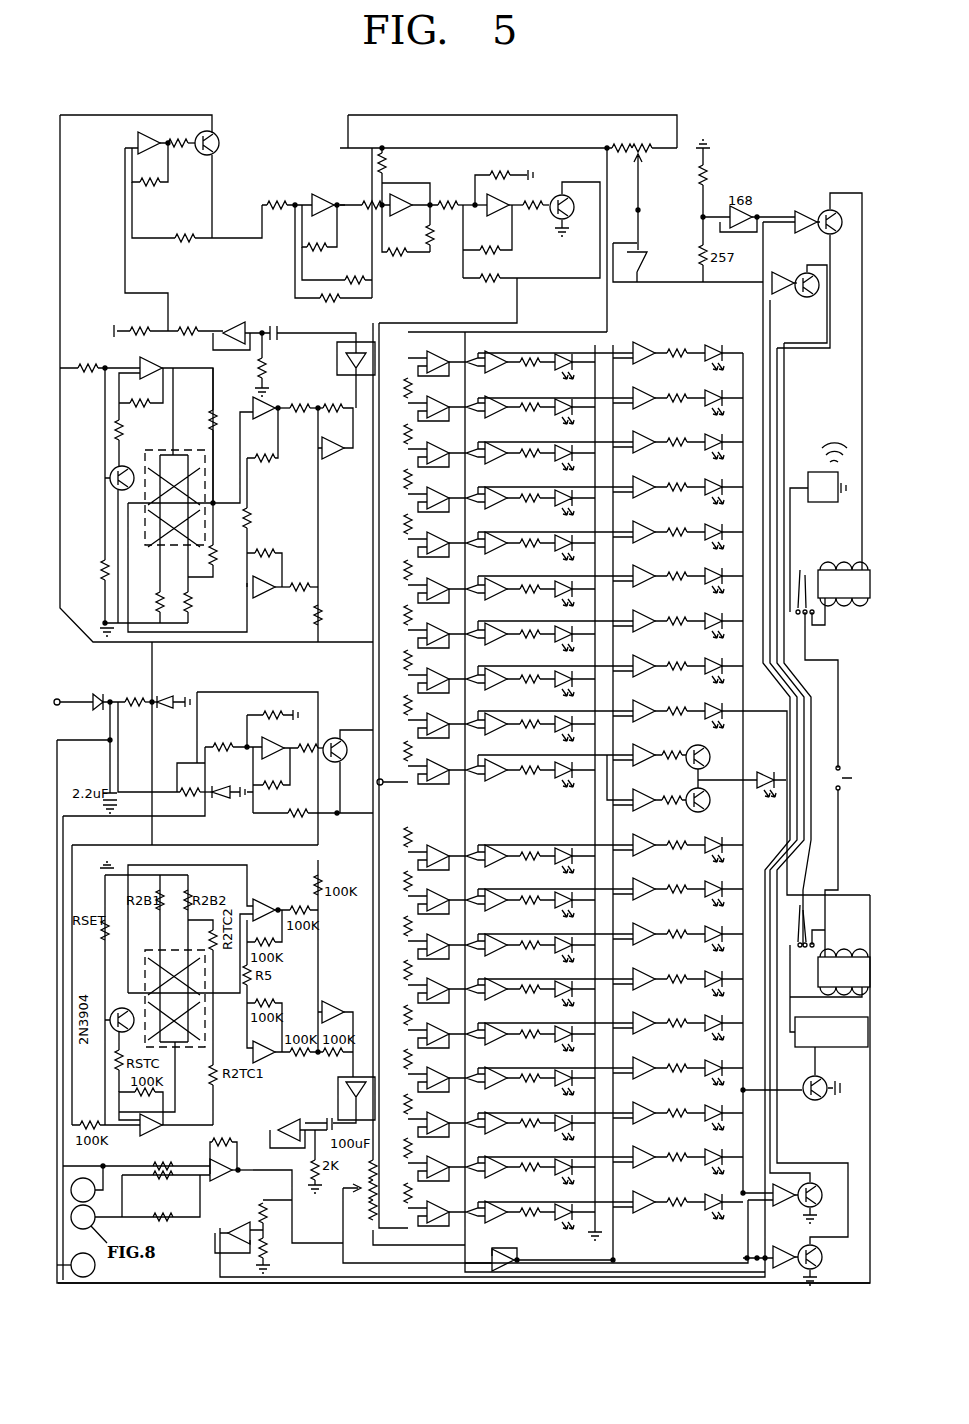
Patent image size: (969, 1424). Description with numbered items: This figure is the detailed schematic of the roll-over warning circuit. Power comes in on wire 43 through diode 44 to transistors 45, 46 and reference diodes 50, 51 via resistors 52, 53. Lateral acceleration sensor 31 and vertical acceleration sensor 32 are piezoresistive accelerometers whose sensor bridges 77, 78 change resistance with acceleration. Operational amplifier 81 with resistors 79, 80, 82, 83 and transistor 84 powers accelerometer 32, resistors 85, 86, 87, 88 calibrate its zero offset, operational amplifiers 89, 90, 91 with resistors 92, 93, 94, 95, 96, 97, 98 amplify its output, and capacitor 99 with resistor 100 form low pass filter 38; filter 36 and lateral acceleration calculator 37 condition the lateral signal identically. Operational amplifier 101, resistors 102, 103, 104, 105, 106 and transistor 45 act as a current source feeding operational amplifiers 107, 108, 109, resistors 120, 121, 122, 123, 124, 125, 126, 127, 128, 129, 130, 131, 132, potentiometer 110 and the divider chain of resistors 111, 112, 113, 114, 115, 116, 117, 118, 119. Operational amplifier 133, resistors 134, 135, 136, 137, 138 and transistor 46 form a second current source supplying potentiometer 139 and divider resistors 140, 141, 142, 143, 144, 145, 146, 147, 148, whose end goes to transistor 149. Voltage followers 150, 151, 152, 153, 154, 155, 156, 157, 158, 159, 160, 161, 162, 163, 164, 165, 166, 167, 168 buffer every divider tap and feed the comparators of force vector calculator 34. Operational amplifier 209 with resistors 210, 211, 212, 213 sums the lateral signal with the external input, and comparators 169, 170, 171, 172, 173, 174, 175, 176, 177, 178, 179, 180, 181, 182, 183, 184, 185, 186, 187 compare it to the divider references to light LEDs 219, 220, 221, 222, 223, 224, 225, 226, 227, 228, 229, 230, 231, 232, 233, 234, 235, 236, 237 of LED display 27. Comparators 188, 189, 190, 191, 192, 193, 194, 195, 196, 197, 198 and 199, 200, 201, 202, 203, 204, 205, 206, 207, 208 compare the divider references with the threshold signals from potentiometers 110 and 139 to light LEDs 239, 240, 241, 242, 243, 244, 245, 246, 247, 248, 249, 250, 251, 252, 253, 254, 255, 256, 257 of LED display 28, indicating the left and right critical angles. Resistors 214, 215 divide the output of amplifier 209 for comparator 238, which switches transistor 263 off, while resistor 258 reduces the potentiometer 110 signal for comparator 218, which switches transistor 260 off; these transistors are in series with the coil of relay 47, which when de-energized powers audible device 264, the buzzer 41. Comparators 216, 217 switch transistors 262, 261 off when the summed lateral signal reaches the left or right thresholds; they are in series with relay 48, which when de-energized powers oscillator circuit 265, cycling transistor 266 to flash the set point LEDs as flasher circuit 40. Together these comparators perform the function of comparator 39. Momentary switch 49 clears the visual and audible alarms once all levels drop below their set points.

The LED display 27 is at (585, 332).
The LED display 28 is at (712, 338).
The lateral acceleration sensor 31 is at (195, 1052).
The vertical acceleration sensor 32 is at (192, 448).
The vehicle force vector calculator 34 is at (500, 348).
The filter 36 is at (315, 1122).
The vehicle lateral acceleration calculator 37 is at (197, 1240).
The filter 38 is at (262, 330).
The comparator 39 is at (787, 200).
The flasher circuit 40 is at (650, 338).
The buzzer 41 is at (806, 492).
The wire 43 is at (73, 703).
The diode 44 is at (122, 691).
The transistor 45 is at (229, 178).
The transistor 46 is at (347, 761).
The relay 47 is at (838, 600).
The relay 48 is at (840, 970).
The momentary switch 49 is at (850, 861).
The reference diode 50 is at (173, 695).
The reference diode 51 is at (232, 797).
The resistor 52 is at (141, 704).
The resistor 53 is at (196, 791).
The thermistor bridge 77 is at (172, 450).
The thermistor bridge 78 is at (146, 943).
The resistor 79 is at (93, 502).
The resistor 80 is at (100, 368).
The operational amplifier 81 is at (176, 424).
The resistor 82 is at (141, 395).
The resistor 83 is at (115, 432).
The transistor 84 is at (105, 530).
The resistor 85 is at (145, 603).
The resistor 86 is at (205, 603).
The resistor 87 is at (212, 540).
The resistor 88 is at (222, 435).
The operational amplifier 89 is at (271, 416).
The operational amplifier 90 is at (271, 595).
The operational amplifier 91 is at (331, 525).
The resistor 92 is at (302, 587).
The resistor 93 is at (264, 560).
The resistor 94 is at (257, 540).
The resistor 95 is at (264, 458).
The resistor 96 is at (304, 407).
The resistor 97 is at (339, 416).
The resistor 98 is at (336, 612).
The capacitor 99 is at (309, 334).
The resistor 100 is at (266, 364).
The operational amplifier 101 is at (149, 223).
The resistor 102 is at (181, 142).
The resistor 103 is at (197, 212).
The resistor 104 is at (195, 331).
The resistor 105 is at (141, 331).
The resistor 106 is at (150, 173).
The operational amplifier 107 is at (328, 198).
The operational amplifier 108 is at (410, 209).
The operational amplifier 109 is at (505, 201).
The potentiometer 110 is at (642, 204).
The resistor 111 is at (397, 395).
The resistor 112 is at (397, 441).
The resistor 113 is at (397, 486).
The resistor 114 is at (397, 531).
The resistor 115 is at (397, 577).
The resistor 116 is at (397, 622).
The resistor 117 is at (397, 667).
The resistor 118 is at (397, 712).
The resistor 119 is at (397, 758).
The resistor 120 is at (287, 205).
The resistor 121 is at (319, 236).
The resistor 122 is at (337, 265).
The resistor 123 is at (333, 262).
The resistor 124 is at (365, 205).
The resistor 125 is at (387, 176).
The resistor 126 is at (406, 239).
The resistor 127 is at (442, 235).
The resistor 128 is at (461, 205).
The resistor 129 is at (504, 180).
The resistor 130 is at (487, 241).
The resistor 131 is at (534, 205).
The resistor 132 is at (531, 232).
The operational amplifier 133 is at (275, 770).
The resistor 134 is at (233, 738).
The resistor 135 is at (272, 721).
The resistor 136 is at (271, 776).
The resistor 137 is at (313, 812).
The resistor 138 is at (309, 748).
The potentiometer 139 is at (361, 1190).
The resistor 140 is at (397, 844).
The resistor 141 is at (397, 888).
The resistor 142 is at (397, 933).
The resistor 143 is at (397, 977).
The resistor 144 is at (397, 1022).
The resistor 145 is at (397, 1066).
The resistor 146 is at (397, 1111).
The resistor 147 is at (397, 1155).
The resistor 148 is at (397, 1200).
The transistor 149 is at (570, 198).
The operational amplifier 150 is at (432, 356).
The operational amplifier 151 is at (432, 401).
The operational amplifier 152 is at (432, 447).
The operational amplifier 153 is at (432, 492).
The operational amplifier 154 is at (432, 537).
The operational amplifier 155 is at (432, 583).
The operational amplifier 156 is at (432, 628).
The operational amplifier 157 is at (432, 673).
The operational amplifier 158 is at (432, 718).
The operational amplifier 159 is at (432, 764).
The operational amplifier 160 is at (432, 850).
The operational amplifier 161 is at (432, 894).
The operational amplifier 162 is at (432, 939).
The operational amplifier 163 is at (432, 983).
The operational amplifier 164 is at (432, 1028).
The operational amplifier 165 is at (432, 1072).
The operational amplifier 166 is at (432, 1117).
The operational amplifier 167 is at (432, 1161).
The operational amplifier 168 is at (432, 1206).
The comparator 169 is at (484, 371).
The comparator 170 is at (484, 416).
The comparator 171 is at (484, 462).
The comparator 172 is at (484, 507).
The comparator 173 is at (484, 552).
The comparator 174 is at (484, 597).
The comparator 175 is at (484, 642).
The comparator 176 is at (484, 687).
The comparator 177 is at (484, 732).
The comparator 178 is at (484, 777).
The comparator 179 is at (484, 865).
The comparator 180 is at (484, 909).
The comparator 181 is at (484, 954).
The comparator 182 is at (484, 998).
The comparator 183 is at (484, 1043).
The comparator 184 is at (484, 1087).
The comparator 185 is at (484, 1132).
The comparator 186 is at (484, 1176).
The comparator 187 is at (484, 1221).
The comparator 188 is at (539, 1255).
The comparator 189 is at (640, 362).
The comparator 190 is at (640, 407).
The comparator 191 is at (640, 451).
The comparator 192 is at (640, 496).
The comparator 193 is at (640, 541).
The comparator 194 is at (640, 585).
The comparator 195 is at (640, 630).
The comparator 196 is at (640, 675).
The comparator 197 is at (640, 720).
The comparator 198 is at (688, 759).
The comparator 199 is at (688, 804).
The comparator 200 is at (640, 854).
The comparator 201 is at (640, 898).
The comparator 202 is at (640, 943).
The comparator 203 is at (640, 988).
The comparator 204 is at (640, 1032).
The comparator 205 is at (640, 1077).
The comparator 206 is at (640, 1122).
The comparator 207 is at (640, 1166).
The comparator 208 is at (640, 1211).
The operational amplifier 209 is at (231, 1177).
The resistor 210 is at (162, 1158).
The resistor 211 is at (160, 1183).
The resistor 212 is at (160, 1209).
The resistor 213 is at (226, 1146).
The resistor 214 is at (277, 1213).
The resistor 215 is at (275, 1255).
The comparator 216 is at (770, 1221).
The comparator 217 is at (783, 291).
The comparator 218 is at (791, 247).
The LED 219 is at (560, 372).
The LED 220 is at (560, 417).
The LED 221 is at (560, 463).
The LED 222 is at (560, 508).
The LED 223 is at (560, 553).
The LED 224 is at (560, 599).
The LED 225 is at (560, 644).
The LED 226 is at (560, 689).
The LED 227 is at (560, 734).
The LED 228 is at (560, 780).
The LED 229 is at (560, 866).
The LED 230 is at (560, 910).
The LED 231 is at (560, 955).
The LED 232 is at (560, 999).
The LED 233 is at (560, 1044).
The LED 234 is at (560, 1088).
The LED 235 is at (560, 1133).
The LED 236 is at (560, 1177).
The LED 237 is at (560, 1222).
The comparator 238 is at (770, 1265).
The LED 239 is at (742, 785).
The LED 240 is at (707, 856).
The LED 241 is at (707, 900).
The LED 242 is at (707, 945).
The LED 243 is at (707, 990).
The LED 244 is at (707, 1034).
The LED 245 is at (707, 1079).
The LED 246 is at (707, 1124).
The LED 247 is at (707, 1168).
The LED 248 is at (707, 1213).
The LED 249 is at (707, 364).
The LED 250 is at (707, 409).
The LED 251 is at (707, 453).
The LED 252 is at (707, 498).
The LED 253 is at (707, 543).
The LED 254 is at (707, 587).
The LED 255 is at (707, 632).
The LED 256 is at (707, 677).
The LED 257 is at (707, 722).
The resistor 258 is at (715, 178).
The transistor 260 is at (819, 378).
The transistor 261 is at (805, 298).
The transistor 262 is at (824, 1203).
The transistor 263 is at (824, 1265).
The audible device 264 is at (818, 527).
The oscillator circuit 265 is at (866, 1048).
The transistor 266 is at (794, 1084).